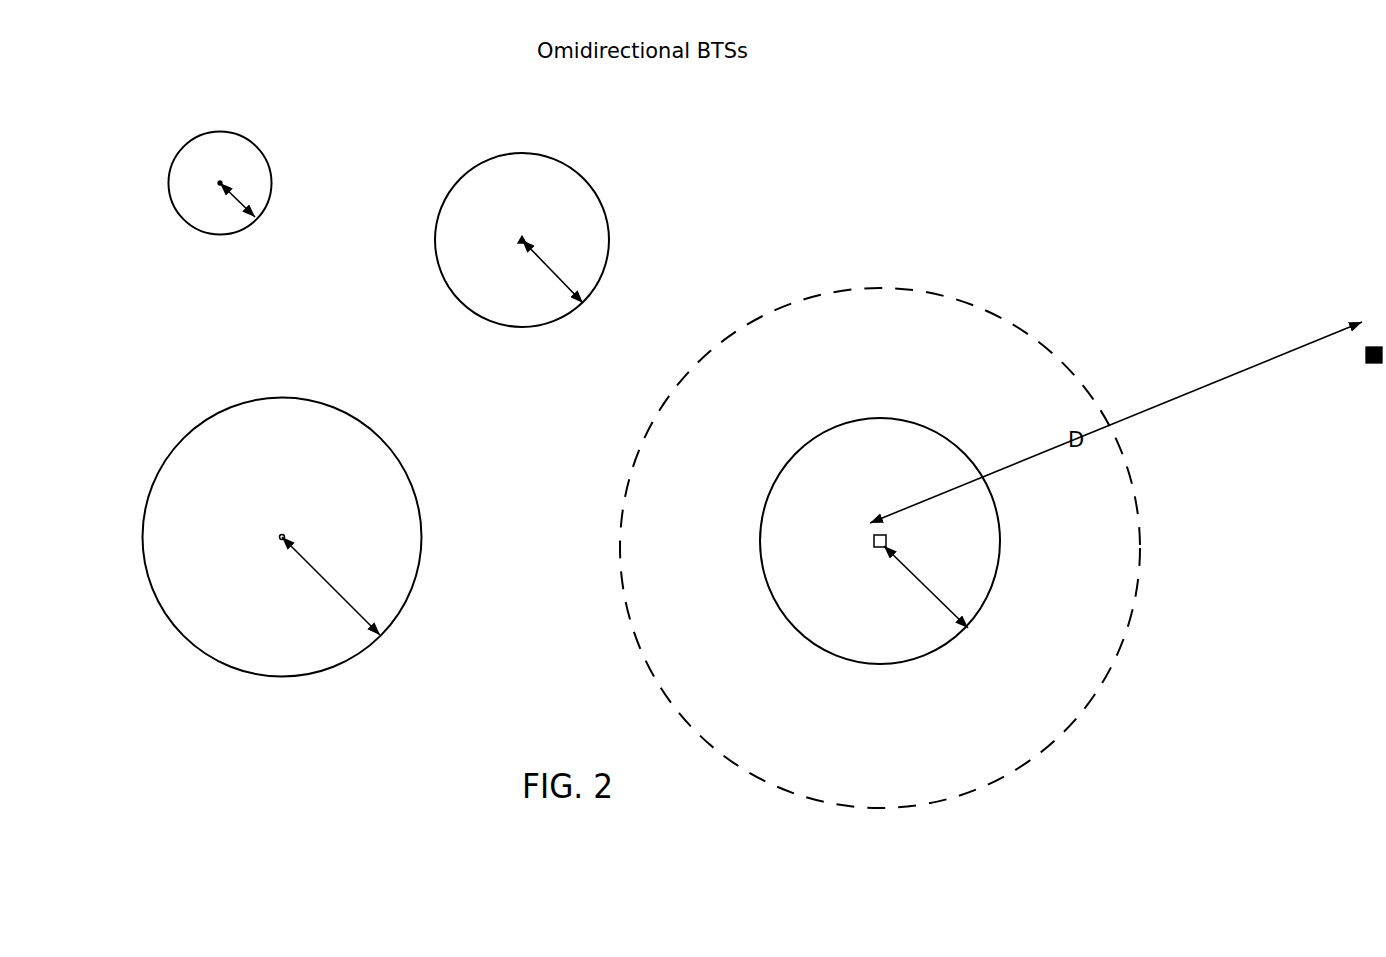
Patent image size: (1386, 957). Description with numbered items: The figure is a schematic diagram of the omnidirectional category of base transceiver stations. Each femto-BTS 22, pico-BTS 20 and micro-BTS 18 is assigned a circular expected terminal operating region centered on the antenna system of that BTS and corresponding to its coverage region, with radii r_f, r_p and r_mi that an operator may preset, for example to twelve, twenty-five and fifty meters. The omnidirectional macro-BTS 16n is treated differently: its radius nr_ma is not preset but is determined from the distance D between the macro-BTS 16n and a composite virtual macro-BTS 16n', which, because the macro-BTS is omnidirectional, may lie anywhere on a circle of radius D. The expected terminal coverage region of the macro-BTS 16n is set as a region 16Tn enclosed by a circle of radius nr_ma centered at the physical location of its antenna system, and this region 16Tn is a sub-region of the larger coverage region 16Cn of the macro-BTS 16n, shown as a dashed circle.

The femto-BTS 22 is at (220, 183).
The pico-BTS 20 is at (522, 240).
The micro-BTS 18 is at (282, 537).
The coverage region 16Cn is at (843, 743).
The expected terminal coverage region 16Tn is at (818, 490).
The omnidirectional macro-BTS 16n is at (852, 600).
The composite virtual macro-BTS 16n' is at (1342, 398).